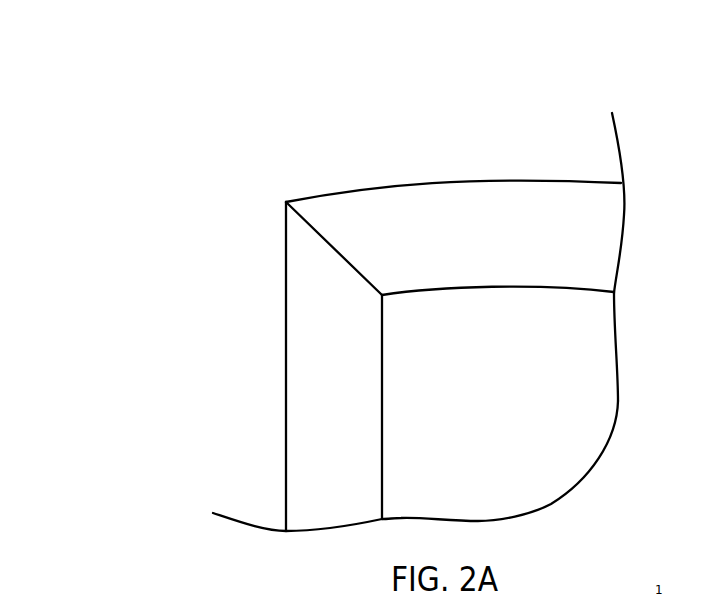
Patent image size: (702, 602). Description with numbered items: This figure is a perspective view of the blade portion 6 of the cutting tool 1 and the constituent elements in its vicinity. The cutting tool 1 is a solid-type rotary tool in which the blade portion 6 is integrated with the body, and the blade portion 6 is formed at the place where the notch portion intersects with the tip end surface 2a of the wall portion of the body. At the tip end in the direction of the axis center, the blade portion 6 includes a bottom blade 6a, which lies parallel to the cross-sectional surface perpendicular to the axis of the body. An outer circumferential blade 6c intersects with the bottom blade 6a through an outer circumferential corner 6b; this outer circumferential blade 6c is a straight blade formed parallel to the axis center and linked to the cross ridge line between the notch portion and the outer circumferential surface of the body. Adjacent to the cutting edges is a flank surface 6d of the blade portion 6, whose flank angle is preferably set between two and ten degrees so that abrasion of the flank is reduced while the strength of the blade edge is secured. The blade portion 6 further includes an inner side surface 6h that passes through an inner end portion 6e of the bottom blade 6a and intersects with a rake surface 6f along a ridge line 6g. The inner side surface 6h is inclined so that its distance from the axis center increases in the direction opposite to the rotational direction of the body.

The cutting tool 1 is at (143, 140).
The tip end surface 2a is at (506, 200).
The blade portion 6 is at (290, 187).
The bottom blade 6a is at (348, 262).
The outer circumferential corner 6b is at (286, 202).
The outer circumferential blade 6c is at (286, 275).
The flank surface 6d is at (358, 217).
The inner end portion 6e is at (382, 296).
The rake surface 6f is at (328, 316).
The ridge line 6g is at (381, 460).
The inner side surface 6h is at (404, 329).